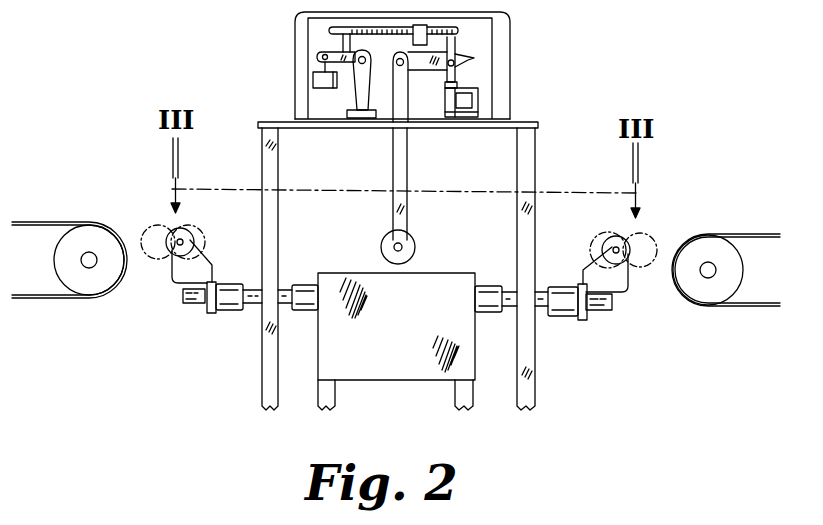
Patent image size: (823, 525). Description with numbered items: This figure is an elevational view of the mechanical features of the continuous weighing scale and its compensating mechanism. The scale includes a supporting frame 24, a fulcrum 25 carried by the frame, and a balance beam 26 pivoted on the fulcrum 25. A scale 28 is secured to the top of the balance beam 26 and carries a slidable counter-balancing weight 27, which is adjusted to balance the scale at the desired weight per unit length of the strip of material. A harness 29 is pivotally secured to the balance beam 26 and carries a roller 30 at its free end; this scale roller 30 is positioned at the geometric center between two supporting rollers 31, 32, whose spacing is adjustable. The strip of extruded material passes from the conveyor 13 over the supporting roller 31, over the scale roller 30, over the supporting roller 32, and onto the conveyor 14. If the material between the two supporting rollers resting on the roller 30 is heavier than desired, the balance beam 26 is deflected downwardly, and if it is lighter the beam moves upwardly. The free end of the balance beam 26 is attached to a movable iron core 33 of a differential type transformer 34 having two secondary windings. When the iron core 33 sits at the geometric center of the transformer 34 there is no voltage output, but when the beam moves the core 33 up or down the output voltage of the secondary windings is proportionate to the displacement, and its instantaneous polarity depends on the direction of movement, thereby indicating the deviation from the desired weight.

The conveyor 13 is at (740, 235).
The conveyor 14 is at (43, 224).
The supporting frame 24 is at (530, 363).
The fulcrum 25 is at (362, 97).
The balance beam 26 is at (456, 55).
The slidable counter-balancing weight 27 is at (427, 28).
The scale 28 is at (330, 30).
The harness 29 is at (403, 162).
The roller 30 is at (412, 247).
The supporting roller 31 is at (620, 235).
The supporting roller 32 is at (182, 233).
The movable iron core 33 is at (462, 82).
The differential type transformer 34 is at (473, 100).